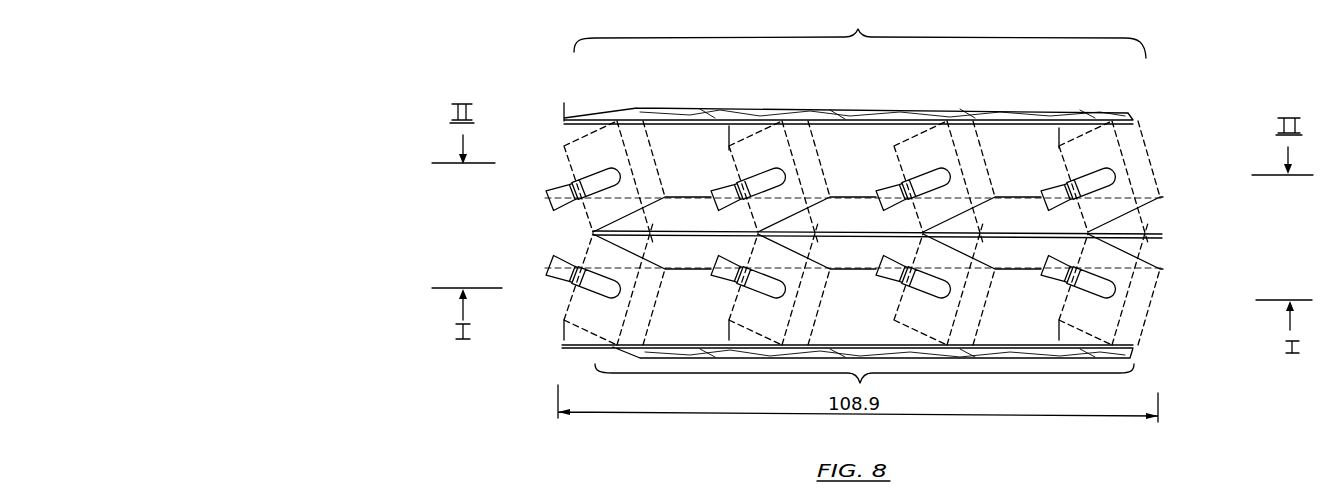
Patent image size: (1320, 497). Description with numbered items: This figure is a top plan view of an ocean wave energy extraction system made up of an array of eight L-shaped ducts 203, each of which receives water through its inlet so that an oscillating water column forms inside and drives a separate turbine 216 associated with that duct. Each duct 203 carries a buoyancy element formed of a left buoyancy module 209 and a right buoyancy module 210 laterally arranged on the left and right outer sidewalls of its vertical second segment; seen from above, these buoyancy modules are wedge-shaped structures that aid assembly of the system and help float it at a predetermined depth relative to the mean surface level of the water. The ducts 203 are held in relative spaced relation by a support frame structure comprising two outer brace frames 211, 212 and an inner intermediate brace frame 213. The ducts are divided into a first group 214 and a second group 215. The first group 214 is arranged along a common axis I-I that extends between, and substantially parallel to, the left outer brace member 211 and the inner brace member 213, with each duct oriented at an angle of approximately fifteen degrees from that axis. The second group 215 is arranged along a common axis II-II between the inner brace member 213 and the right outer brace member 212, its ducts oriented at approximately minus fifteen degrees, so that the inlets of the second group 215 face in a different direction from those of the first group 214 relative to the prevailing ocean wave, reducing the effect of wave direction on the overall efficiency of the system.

The L-shaped duct 203 is at (1143, 163).
The left buoyancy module 209 is at (808, 222).
The right buoyancy module 210 is at (733, 136).
The left outer brace frame 211 is at (585, 340).
The right outer brace frame 212 is at (588, 118).
The inner intermediate brace frame 213 is at (1150, 238).
The first group of ducts 214 is at (866, 381).
The second group of ducts 215 is at (860, 31).
The turbine 216 is at (578, 177).